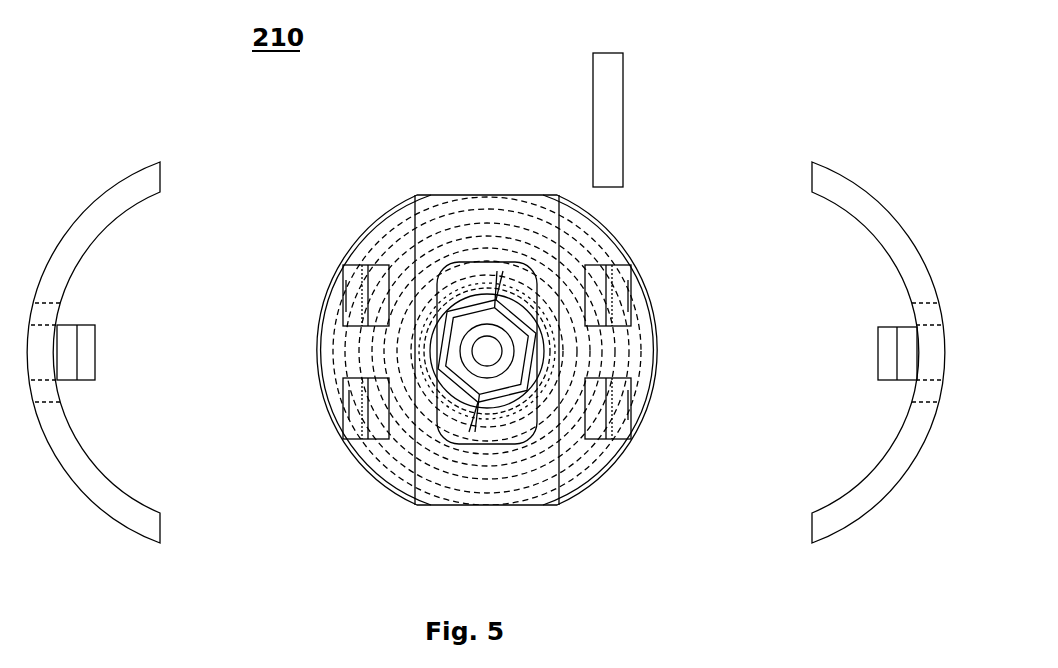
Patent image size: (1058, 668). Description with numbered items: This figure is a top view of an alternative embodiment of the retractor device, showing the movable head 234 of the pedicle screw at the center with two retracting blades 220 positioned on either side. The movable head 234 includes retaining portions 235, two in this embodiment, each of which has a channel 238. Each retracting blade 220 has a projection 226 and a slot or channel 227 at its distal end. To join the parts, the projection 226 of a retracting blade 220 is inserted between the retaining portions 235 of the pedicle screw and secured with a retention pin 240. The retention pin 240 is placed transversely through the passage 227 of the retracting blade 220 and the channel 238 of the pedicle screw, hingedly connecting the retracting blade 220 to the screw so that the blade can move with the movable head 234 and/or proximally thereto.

The retracting blade 220 is at (110, 207).
The projection 226 is at (93, 335).
The slot or channel 227 is at (80, 324).
The movable head 234 is at (382, 222).
The retaining portion 235 is at (346, 295).
The channel 238 is at (358, 272).
The retention pin 240 is at (601, 105).